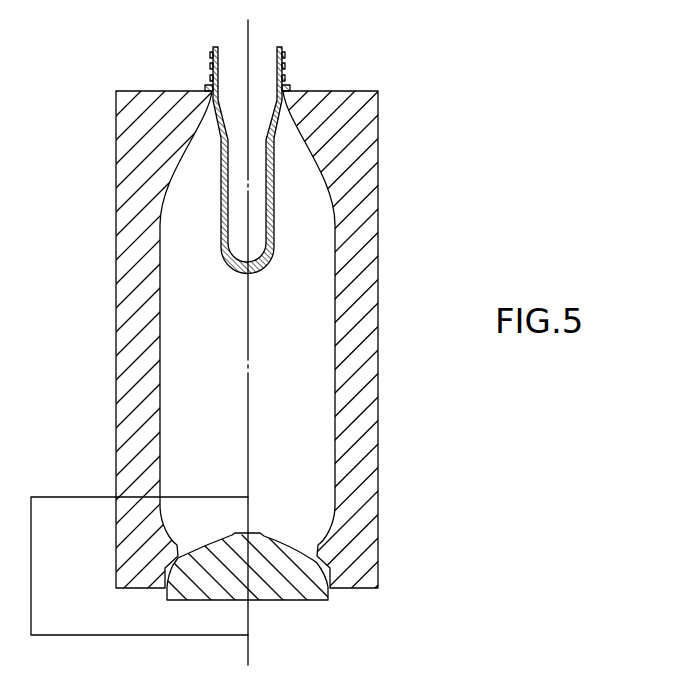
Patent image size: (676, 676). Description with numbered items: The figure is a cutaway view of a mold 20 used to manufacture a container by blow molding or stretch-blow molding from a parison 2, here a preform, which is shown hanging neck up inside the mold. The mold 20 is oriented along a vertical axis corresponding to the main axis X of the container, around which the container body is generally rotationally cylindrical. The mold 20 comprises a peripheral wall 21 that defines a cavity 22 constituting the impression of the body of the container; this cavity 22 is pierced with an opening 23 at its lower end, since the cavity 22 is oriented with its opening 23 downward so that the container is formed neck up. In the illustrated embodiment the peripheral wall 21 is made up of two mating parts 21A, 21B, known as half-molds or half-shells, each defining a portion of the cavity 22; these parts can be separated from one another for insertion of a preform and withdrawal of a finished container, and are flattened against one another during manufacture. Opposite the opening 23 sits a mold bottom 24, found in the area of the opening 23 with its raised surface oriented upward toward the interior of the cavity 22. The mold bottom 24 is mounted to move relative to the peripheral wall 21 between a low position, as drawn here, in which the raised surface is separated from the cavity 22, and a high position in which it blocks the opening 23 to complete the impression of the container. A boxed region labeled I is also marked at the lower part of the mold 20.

The parison 2 is at (287, 62).
The mold 20 is at (253, 334).
The peripheral wall 21 is at (253, 339).
The mating part 21A is at (358, 378).
The mating part 21B is at (130, 353).
The cavity 22 is at (295, 405).
The opening 23 is at (312, 542).
The mold bottom 24 is at (290, 595).
The main axis X is at (250, 313).
The detail region I is at (128, 567).